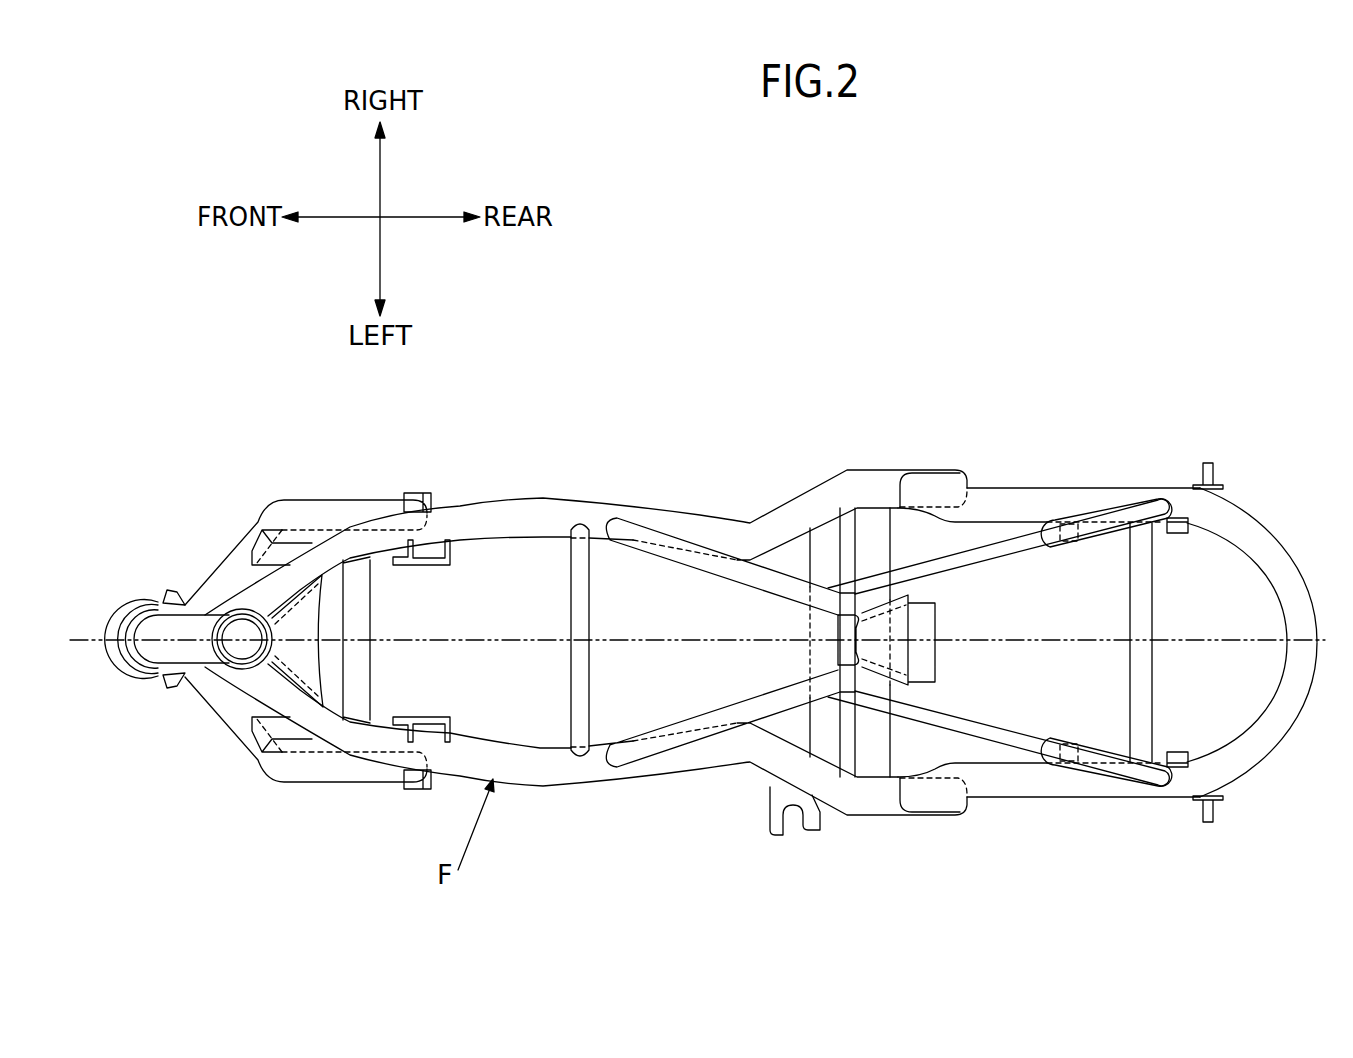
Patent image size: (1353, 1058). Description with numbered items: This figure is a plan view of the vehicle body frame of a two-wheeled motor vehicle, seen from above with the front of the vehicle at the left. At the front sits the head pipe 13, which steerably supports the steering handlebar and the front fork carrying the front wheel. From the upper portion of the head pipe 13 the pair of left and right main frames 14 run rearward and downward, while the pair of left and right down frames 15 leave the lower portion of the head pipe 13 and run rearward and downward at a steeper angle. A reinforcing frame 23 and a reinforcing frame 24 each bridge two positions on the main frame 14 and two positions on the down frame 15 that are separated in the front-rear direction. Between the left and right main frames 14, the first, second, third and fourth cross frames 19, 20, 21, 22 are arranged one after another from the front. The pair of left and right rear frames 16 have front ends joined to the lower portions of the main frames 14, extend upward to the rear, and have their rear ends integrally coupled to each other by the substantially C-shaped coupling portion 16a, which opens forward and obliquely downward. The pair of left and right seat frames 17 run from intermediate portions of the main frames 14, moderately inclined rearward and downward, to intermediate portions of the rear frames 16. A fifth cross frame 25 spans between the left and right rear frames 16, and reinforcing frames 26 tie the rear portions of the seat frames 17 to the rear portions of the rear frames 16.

The head pipe 13 is at (205, 657).
The main frames 14 is at (540, 778).
The down frames 15 is at (317, 775).
The rear frames 16 is at (1000, 792).
The coupling portion 16a is at (1273, 557).
The seat frames 17 is at (950, 720).
The first cross frame 19 is at (358, 628).
The second cross frame 20 is at (577, 623).
The third cross frame 21 is at (823, 632).
The fourth cross frame 22 is at (877, 772).
The reinforcing frame 23 is at (253, 727).
The reinforcing frame 24 is at (302, 747).
The fifth cross frame 25 is at (1133, 653).
The reinforcing frames 26 is at (1138, 777).